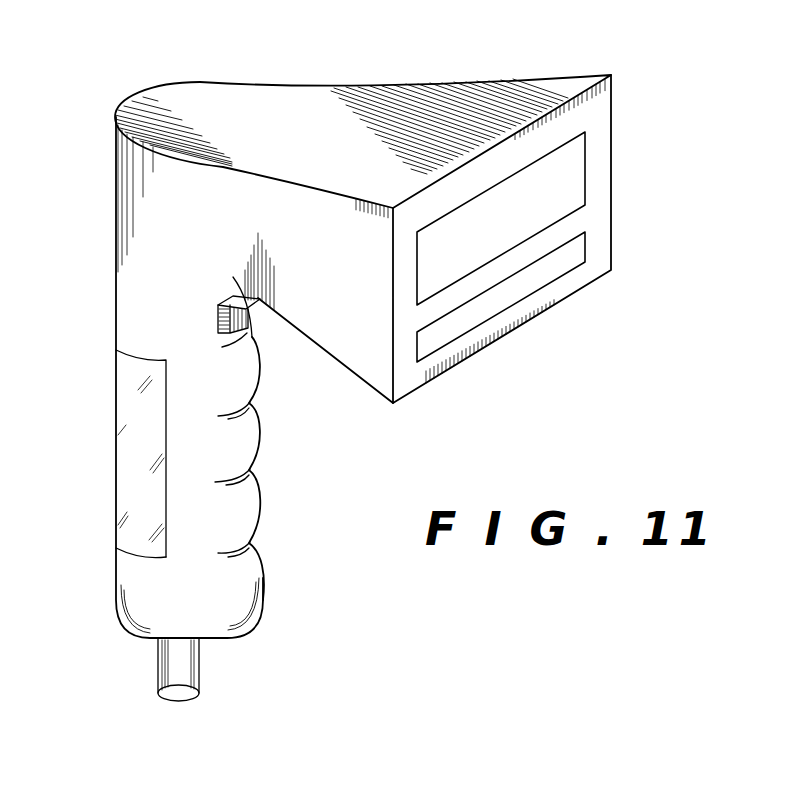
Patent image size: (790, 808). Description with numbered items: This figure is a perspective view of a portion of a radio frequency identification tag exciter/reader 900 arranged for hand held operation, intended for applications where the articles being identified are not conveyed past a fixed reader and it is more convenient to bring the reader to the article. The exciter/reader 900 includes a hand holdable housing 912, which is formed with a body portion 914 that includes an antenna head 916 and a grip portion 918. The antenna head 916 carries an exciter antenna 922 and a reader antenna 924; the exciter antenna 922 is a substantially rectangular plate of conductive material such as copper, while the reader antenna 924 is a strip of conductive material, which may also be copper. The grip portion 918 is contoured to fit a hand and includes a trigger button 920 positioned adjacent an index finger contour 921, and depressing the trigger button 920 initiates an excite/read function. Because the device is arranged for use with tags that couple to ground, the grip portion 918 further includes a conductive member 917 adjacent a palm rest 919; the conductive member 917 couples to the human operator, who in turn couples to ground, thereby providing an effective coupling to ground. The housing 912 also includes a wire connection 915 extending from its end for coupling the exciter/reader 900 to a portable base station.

The radio frequency identification tag exciter/reader 900 is at (173, 81).
The hand holdable housing 912 is at (502, 78).
The body portion 914 is at (135, 333).
The wire connection 915 is at (193, 673).
The antenna head 916 is at (595, 117).
The conductive member 917 is at (130, 473).
The grip portion 918 is at (247, 475).
The palm rest 919 is at (120, 550).
The trigger button 920 is at (240, 296).
The index finger contour 921 is at (247, 333).
The exciter antenna 922 is at (572, 172).
The reader antenna 924 is at (575, 257).